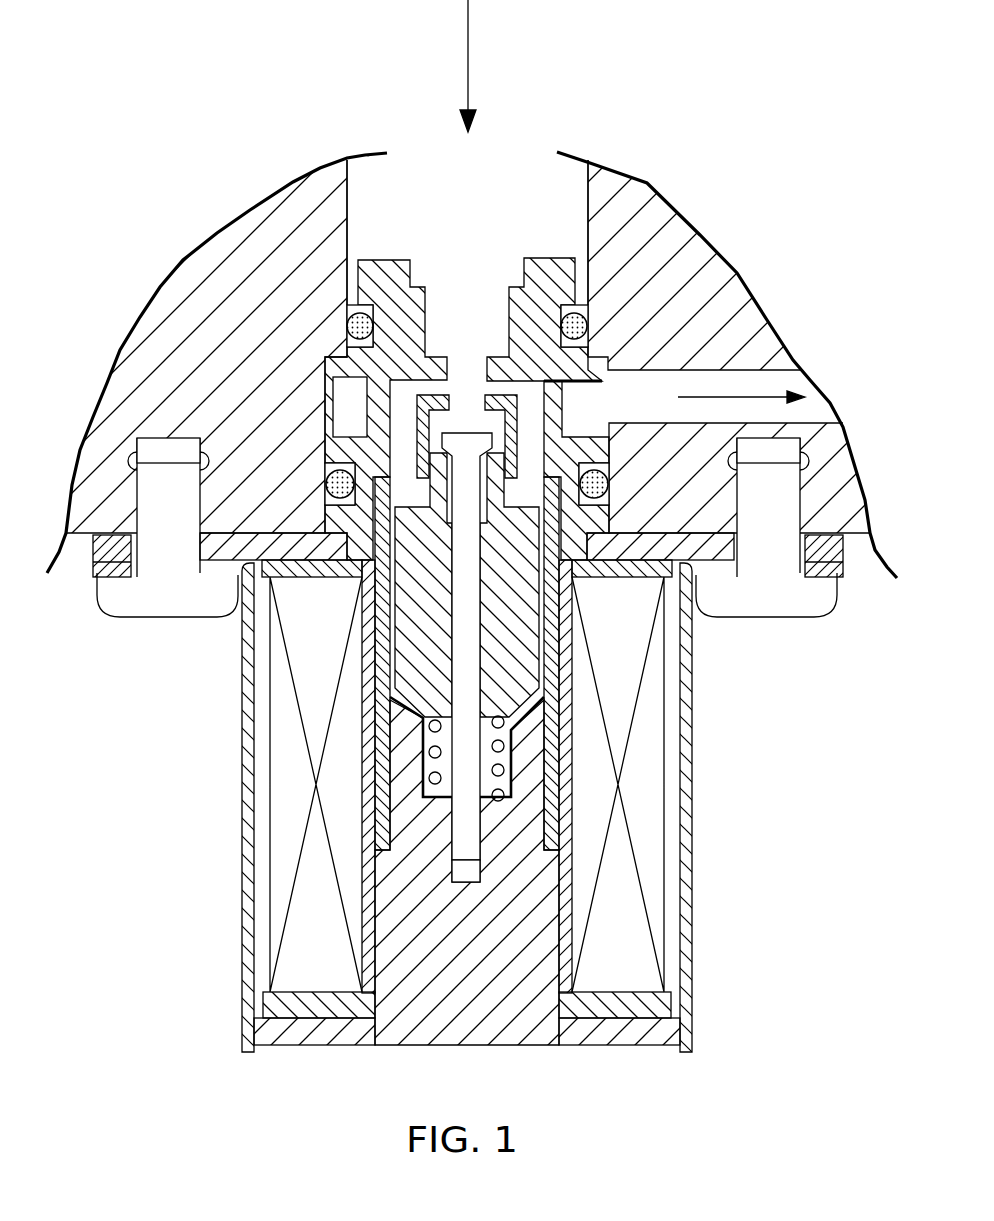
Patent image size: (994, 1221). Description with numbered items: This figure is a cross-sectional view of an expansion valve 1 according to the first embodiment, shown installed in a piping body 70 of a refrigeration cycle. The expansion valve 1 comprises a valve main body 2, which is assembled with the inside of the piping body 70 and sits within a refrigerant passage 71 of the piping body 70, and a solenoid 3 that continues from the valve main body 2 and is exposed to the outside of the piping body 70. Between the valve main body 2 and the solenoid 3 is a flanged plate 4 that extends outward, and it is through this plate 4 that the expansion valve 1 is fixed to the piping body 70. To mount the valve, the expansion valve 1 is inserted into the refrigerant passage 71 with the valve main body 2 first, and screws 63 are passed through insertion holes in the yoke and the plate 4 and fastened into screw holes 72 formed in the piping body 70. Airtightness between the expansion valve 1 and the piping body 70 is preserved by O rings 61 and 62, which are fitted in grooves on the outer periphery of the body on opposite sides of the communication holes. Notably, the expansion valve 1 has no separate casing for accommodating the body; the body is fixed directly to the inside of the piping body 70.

The expansion valve 1 is at (545, 742).
The valve main body 2 is at (538, 257).
The solenoid 3 is at (697, 917).
The flanged plate 4 is at (705, 548).
The O ring 61 is at (345, 322).
The O ring 62 is at (330, 470).
The screws 63 is at (150, 612).
The piping body 70 is at (230, 250).
The refrigerant passage 71 is at (357, 200).
The screw holes 72 is at (133, 463).